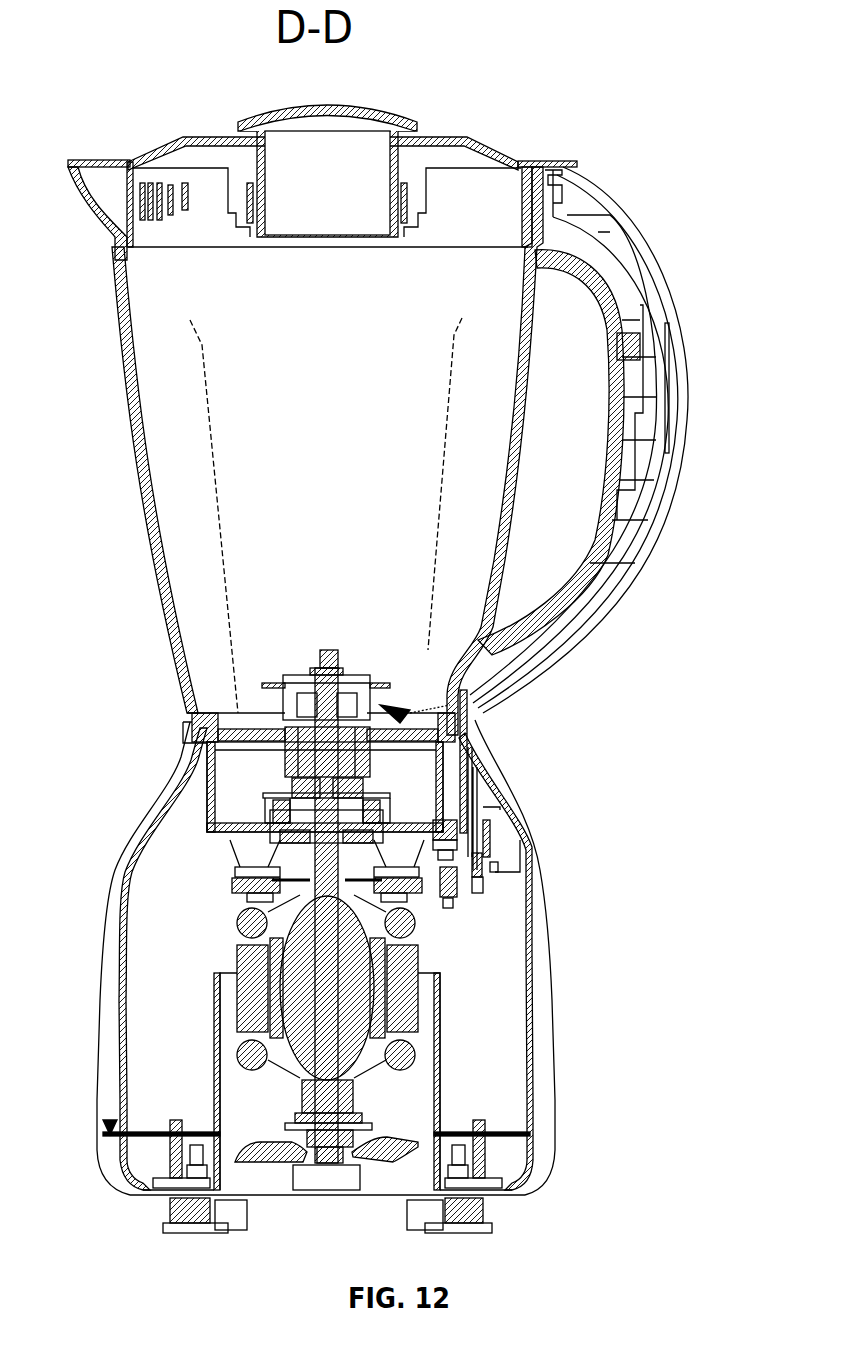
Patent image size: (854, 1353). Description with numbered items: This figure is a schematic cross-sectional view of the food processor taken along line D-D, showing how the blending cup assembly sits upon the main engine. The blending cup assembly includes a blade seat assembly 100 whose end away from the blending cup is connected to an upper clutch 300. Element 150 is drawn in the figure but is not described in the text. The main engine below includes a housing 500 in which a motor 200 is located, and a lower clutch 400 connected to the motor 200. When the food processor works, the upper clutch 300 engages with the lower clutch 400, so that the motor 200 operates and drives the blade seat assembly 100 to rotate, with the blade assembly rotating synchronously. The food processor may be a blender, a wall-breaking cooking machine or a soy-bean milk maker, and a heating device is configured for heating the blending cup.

The blade seat assembly 100 is at (475, 735).
The blade base housing 150 is at (433, 797).
The motor 200 is at (345, 990).
The upper clutch 300 is at (486, 840).
The lower clutch 400 is at (483, 892).
The housing 500 is at (535, 932).